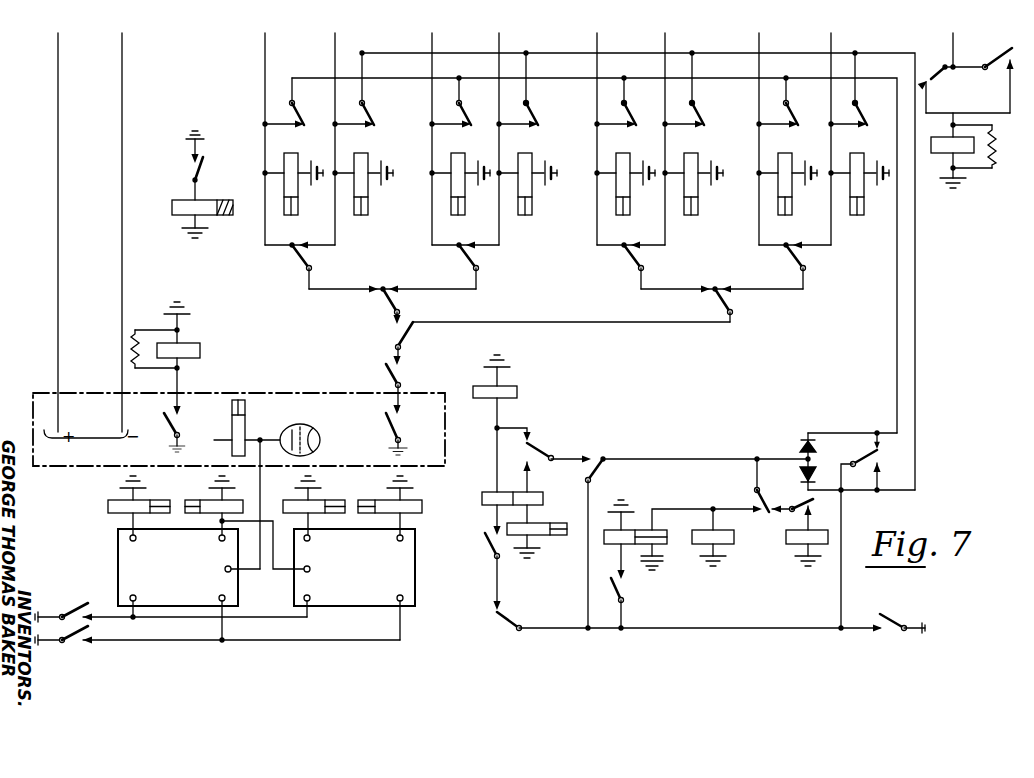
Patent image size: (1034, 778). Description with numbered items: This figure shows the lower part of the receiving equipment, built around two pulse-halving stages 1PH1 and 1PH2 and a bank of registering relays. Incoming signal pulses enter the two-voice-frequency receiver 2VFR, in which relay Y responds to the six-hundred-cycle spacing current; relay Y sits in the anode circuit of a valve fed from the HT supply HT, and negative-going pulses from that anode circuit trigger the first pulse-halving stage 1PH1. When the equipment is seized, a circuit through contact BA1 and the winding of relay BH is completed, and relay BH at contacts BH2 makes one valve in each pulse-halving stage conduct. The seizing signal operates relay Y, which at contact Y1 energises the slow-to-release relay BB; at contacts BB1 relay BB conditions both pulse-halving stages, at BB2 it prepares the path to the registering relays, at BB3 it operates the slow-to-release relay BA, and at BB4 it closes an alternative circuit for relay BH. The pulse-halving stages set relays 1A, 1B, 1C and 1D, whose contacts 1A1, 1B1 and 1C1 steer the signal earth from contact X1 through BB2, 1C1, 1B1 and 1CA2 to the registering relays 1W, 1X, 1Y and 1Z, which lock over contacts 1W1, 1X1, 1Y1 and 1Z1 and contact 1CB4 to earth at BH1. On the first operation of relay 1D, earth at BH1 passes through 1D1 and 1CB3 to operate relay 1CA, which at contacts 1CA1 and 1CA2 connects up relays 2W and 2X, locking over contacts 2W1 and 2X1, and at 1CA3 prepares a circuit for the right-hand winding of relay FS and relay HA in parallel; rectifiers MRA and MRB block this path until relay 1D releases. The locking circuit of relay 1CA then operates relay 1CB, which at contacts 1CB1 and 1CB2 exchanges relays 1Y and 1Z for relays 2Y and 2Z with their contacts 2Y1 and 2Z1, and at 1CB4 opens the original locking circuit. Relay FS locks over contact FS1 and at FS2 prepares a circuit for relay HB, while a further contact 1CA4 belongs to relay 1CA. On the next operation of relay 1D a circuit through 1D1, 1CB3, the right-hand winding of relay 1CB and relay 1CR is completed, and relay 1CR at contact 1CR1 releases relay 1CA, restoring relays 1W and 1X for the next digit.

The relay 1W contact 1W1 is at (299, 103).
The relay 2W contact 2W1 is at (369, 89).
The locking contact of relay 1X 1X1 is at (463, 102).
The relay 2X contact 2X1 is at (530, 89).
The relay 1Y contact 1Y1 is at (628, 102).
The relay 2Y contact 2Y1 is at (696, 89).
The relay 1Z contact 1Z1 is at (790, 102).
The relay 2Z contact 2Z1 is at (861, 89).
The registering relay 1W is at (284, 151).
The registering relay 2W is at (354, 151).
The registering relay 1X is at (450, 151).
The registering relay 2X is at (517, 151).
The registering relay 1Y is at (615, 151).
The registering relay 2Y is at (683, 151).
The registering relay 1Z is at (776, 151).
The registering relay 2Z is at (848, 151).
The contact 1CA1 of relay 1CA 1CA1 is at (300, 257).
The contact 1CA2 of relay 1CA 1CA2 is at (467, 257).
The contact 1CB1 of relay 1CB 1CB1 is at (632, 257).
The contact 1CB2 of relay 1CB 1CB2 is at (794, 257).
The contact 1B1 of relay 1B 1B1 is at (392, 292).
The contact 1C1 of relay 1C 1C1 is at (546, 331).
The relay 1A contact 1A1 is at (722, 296).
The contact BB2 of relay BB BB2 is at (408, 367).
The contact X1 of relay X X1 is at (403, 420).
The two voice frequency receiver 2VFR is at (239, 429).
The relay BB is at (223, 353).
The contact Y1 of relay Y Y1 is at (181, 429).
The high tension supply terminal HT is at (208, 442).
The relay Y is at (259, 411).
The relay 1B is at (101, 508).
The relay 1A is at (259, 508).
The relay 1D is at (279, 508).
The relay 1C is at (440, 512).
The first pulse-halving stage 1PH1 is at (178, 584).
The second pulse-halving stage 1PH2 is at (354, 584).
The contact BH2 of relay BH BH2 is at (171, 610).
The contact BB1 of relay BB BB1 is at (217, 634).
The relay 1CA is at (548, 398).
The contact 1CB3 of relay 1CB 1CB3 is at (541, 460).
The contact 1D1 of relay 1D 1D1 is at (695, 535).
The relay 1CB is at (478, 503).
The relay 1CR is at (576, 558).
The relay 1CA contact 4 1CA4 is at (475, 555).
The contact 1CR1 of relay 1CR 1CR1 is at (665, 616).
The relay FS is at (612, 562).
The contact FS1 of relay FS FS1 is at (632, 586).
The rectifier MRA is at (793, 447).
The rectifier MRB is at (793, 474).
The contact 1CB4 of relay 1CB 1CB4 is at (879, 530).
The contact 1CA3 of relay 1CA 1CA3 is at (743, 485).
The contact FS2 of relay FS FS2 is at (805, 514).
The relay HA is at (754, 565).
The relay HB is at (790, 565).
The contact BH1 of relay BH BH1 is at (899, 620).
The contact BA1 of relay BA BA1 is at (964, 73).
The contact BB4 of relay BB BB4 is at (1002, 76).
The relay BH is at (941, 173).
The contact BB3 of relay BB BB3 is at (211, 156).
The relay BA is at (258, 212).